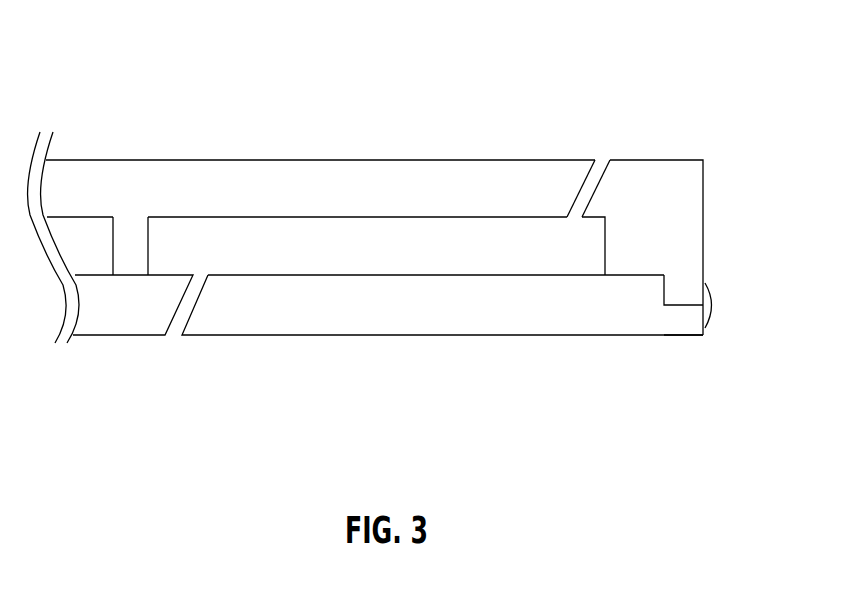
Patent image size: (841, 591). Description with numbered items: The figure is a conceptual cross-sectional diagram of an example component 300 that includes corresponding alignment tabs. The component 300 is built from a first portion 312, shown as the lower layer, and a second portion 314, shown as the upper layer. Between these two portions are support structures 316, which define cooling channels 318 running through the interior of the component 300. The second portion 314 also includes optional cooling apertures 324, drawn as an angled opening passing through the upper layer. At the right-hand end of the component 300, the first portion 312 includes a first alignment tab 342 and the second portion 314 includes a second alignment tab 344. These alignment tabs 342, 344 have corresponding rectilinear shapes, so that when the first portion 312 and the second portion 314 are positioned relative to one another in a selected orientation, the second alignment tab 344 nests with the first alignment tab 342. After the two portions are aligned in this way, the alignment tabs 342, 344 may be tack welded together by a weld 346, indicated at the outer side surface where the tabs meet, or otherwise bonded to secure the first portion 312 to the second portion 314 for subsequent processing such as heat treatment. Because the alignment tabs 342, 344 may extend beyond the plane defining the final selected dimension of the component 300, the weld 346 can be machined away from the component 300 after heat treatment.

The component 300 is at (99, 116).
The first portion 312 is at (407, 335).
The second portion 314 is at (392, 160).
The support structures 316 is at (126, 226).
The cooling channels 318 is at (410, 262).
The cooling apertures 324 is at (599, 153).
The first alignment tab 342 is at (683, 336).
The second alignment tab 344 is at (685, 278).
The weld 346 is at (710, 305).